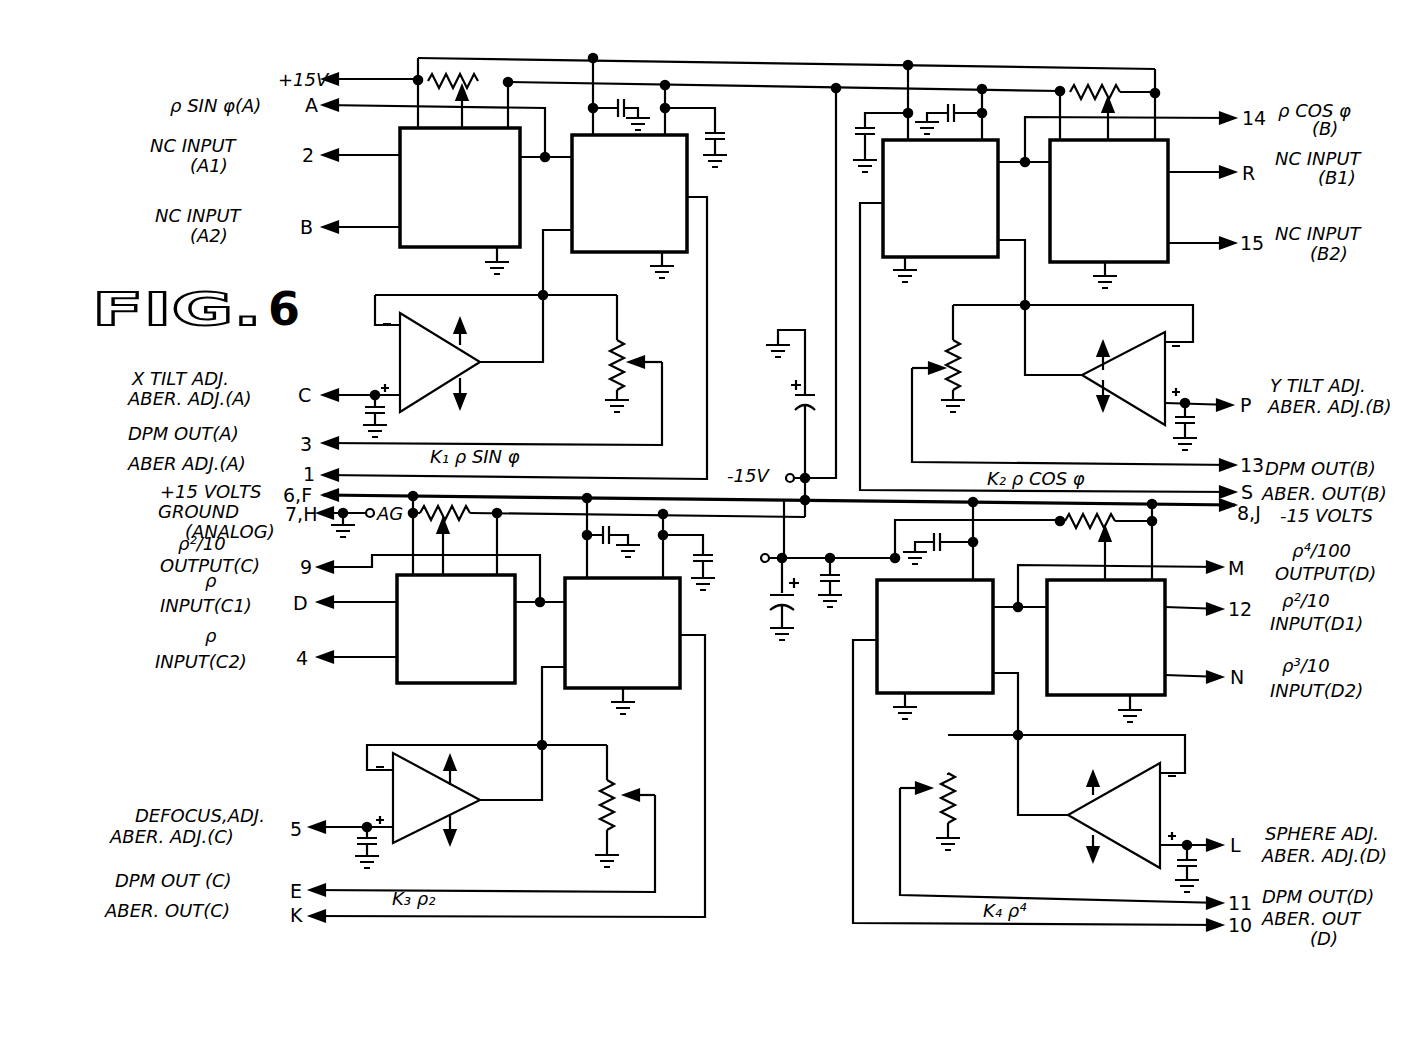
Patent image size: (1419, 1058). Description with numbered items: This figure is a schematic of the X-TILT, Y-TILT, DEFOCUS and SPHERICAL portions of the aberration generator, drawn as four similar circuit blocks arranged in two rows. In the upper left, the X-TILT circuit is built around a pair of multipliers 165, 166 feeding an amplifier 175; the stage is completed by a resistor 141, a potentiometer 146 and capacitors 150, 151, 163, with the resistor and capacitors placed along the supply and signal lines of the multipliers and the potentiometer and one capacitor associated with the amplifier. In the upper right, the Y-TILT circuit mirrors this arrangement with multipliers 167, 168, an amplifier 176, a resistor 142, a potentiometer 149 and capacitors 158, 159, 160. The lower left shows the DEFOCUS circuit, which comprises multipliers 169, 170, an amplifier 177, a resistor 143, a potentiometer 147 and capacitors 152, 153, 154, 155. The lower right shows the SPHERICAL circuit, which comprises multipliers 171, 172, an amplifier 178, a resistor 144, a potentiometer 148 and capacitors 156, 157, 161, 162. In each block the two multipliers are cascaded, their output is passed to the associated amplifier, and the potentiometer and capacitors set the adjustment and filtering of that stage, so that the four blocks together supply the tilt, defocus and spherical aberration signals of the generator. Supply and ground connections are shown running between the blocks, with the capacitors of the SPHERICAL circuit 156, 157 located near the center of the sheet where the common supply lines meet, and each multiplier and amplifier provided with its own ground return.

The resistor 141 is at (482, 86).
The resistor 142 is at (1122, 90).
The resistor 143 is at (437, 520).
The resistor 144 is at (1125, 528).
The potentiometer 146 is at (625, 352).
The potentiometer 147 is at (598, 815).
The potentiometer 148 is at (987, 770).
The potentiometer 149 is at (963, 370).
The capacitor 150 is at (632, 96).
The capacitor 151 is at (723, 138).
The capacitor 152 is at (585, 540).
The capacitor 153 is at (714, 568).
The capacitor 154 is at (768, 615).
The capacitor 155 is at (380, 848).
The capacitor 156 is at (796, 404).
The capacitor 157 is at (822, 598).
The capacitor 158 is at (855, 143).
The capacitor 159 is at (960, 108).
The capacitor 160 is at (1178, 430).
The capacitor 161 is at (944, 536).
The capacitor 162 is at (1172, 864).
The capacitor 163 is at (370, 404).
The multiplier 165 is at (470, 265).
The multiplier 166 is at (636, 253).
The multiplier 167 is at (933, 258).
The multiplier 168 is at (1147, 263).
The multiplier 169 is at (433, 686).
The multiplier 170 is at (638, 690).
The multiplier 171 is at (925, 695).
The multiplier 172 is at (1108, 698).
The amplifier 175 is at (468, 368).
The amplifier 176 is at (1098, 390).
The amplifier 177 is at (462, 810).
The amplifier 178 is at (1070, 820).